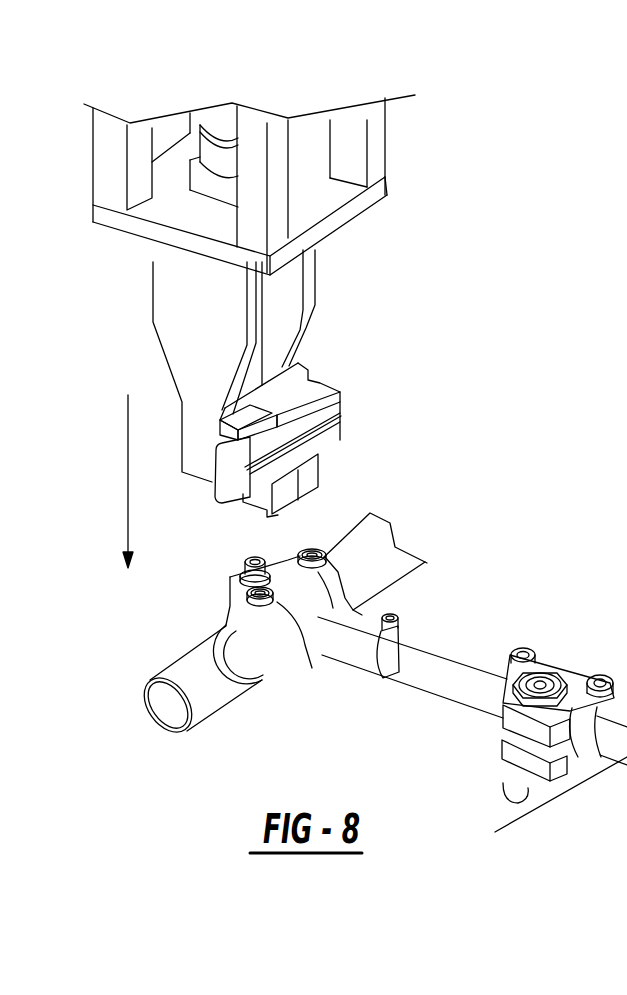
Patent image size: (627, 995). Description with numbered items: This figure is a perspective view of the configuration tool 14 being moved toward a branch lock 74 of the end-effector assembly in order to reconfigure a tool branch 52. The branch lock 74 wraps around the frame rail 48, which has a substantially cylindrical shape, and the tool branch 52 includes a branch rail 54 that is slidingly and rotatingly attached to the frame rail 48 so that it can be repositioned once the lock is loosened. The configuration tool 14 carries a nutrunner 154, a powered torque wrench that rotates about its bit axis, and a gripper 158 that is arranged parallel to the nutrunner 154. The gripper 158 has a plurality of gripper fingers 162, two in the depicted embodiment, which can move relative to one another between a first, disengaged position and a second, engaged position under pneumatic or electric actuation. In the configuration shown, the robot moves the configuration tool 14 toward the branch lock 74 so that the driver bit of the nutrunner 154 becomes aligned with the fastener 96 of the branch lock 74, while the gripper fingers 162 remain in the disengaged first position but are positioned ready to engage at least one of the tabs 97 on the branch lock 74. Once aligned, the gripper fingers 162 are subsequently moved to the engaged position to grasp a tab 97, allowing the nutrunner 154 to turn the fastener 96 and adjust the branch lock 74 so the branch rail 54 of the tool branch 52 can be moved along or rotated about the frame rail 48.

The configuration tool 14 is at (418, 150).
The nutrunner 154 is at (279, 370).
The gripper 158 is at (365, 377).
The gripper fingers 162 is at (319, 462).
The branch lock 74 is at (180, 614).
The tool branch 52 is at (210, 755).
The fastener 96 is at (245, 560).
The tabs 97 is at (316, 550).
The frame rail 48 is at (383, 574).
The branch rail 54 is at (450, 703).